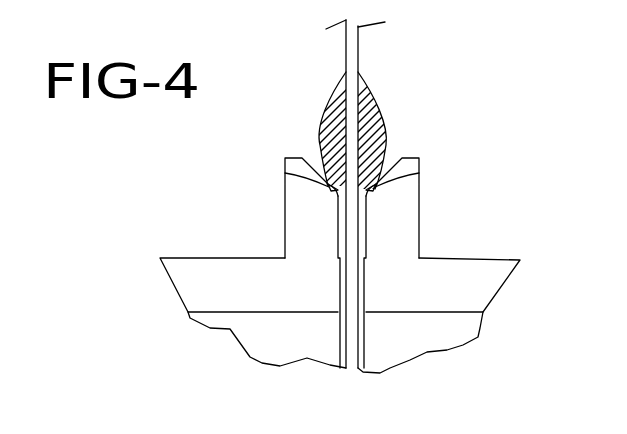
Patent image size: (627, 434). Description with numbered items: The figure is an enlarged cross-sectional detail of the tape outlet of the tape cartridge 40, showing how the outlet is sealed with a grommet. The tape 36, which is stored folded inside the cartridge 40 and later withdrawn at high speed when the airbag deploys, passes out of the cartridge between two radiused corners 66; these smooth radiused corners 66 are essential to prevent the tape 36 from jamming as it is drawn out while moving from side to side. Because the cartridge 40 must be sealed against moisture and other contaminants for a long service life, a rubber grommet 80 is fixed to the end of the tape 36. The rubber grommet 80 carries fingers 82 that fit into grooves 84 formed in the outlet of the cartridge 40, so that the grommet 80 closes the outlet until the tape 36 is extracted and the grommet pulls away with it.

The tape 36 is at (356, 50).
The tape cartridge 40 is at (497, 259).
The radiused corners 66 is at (307, 160).
The rubber grommet 80 is at (376, 100).
The fingers 82 is at (285, 173).
The grooves 84 is at (331, 192).